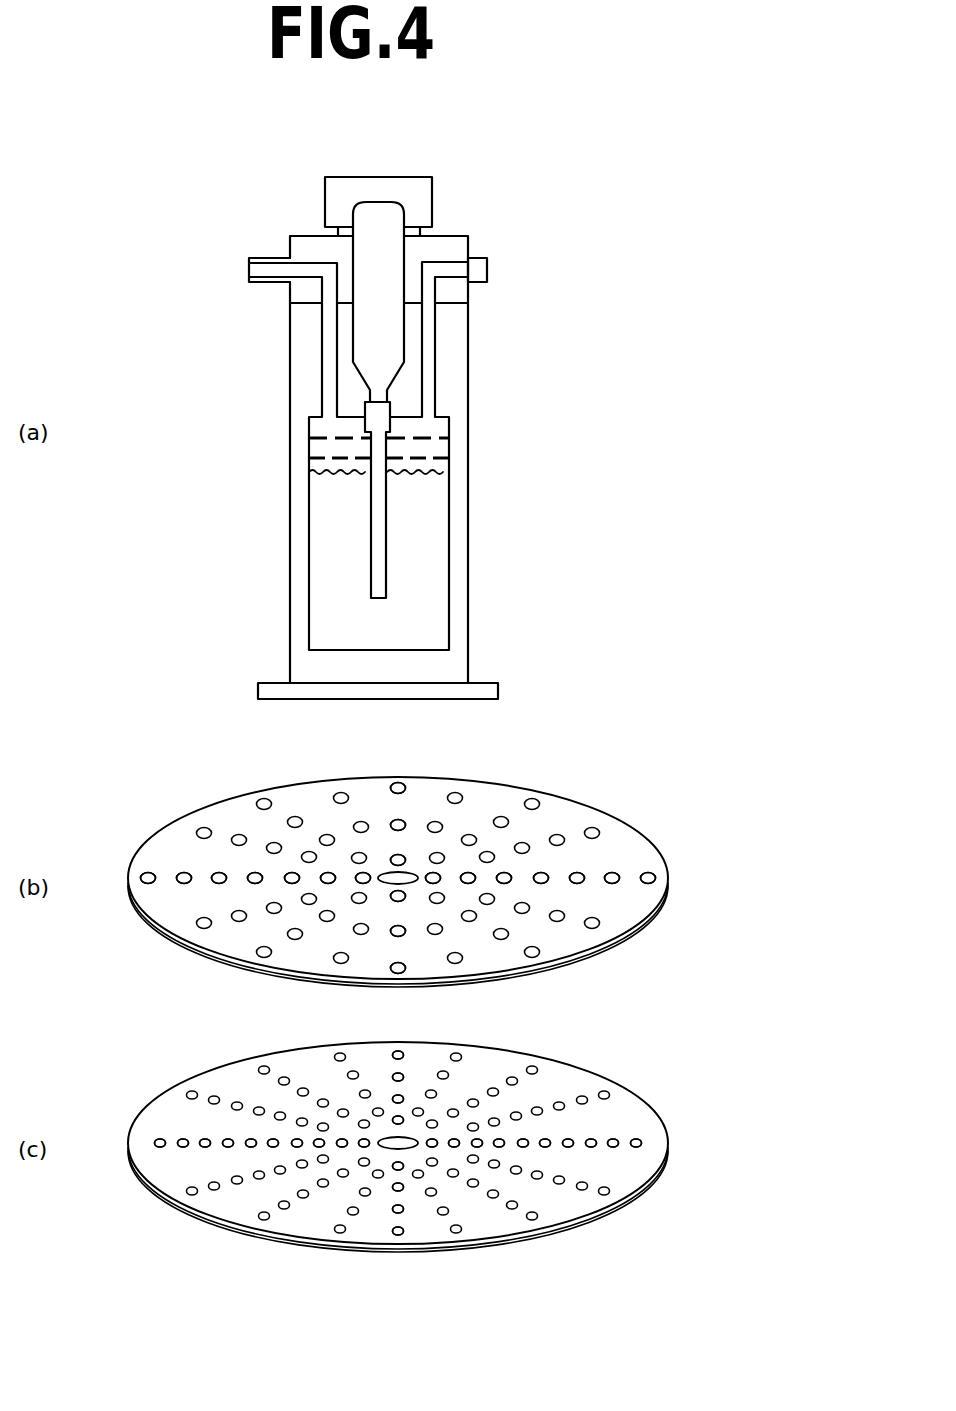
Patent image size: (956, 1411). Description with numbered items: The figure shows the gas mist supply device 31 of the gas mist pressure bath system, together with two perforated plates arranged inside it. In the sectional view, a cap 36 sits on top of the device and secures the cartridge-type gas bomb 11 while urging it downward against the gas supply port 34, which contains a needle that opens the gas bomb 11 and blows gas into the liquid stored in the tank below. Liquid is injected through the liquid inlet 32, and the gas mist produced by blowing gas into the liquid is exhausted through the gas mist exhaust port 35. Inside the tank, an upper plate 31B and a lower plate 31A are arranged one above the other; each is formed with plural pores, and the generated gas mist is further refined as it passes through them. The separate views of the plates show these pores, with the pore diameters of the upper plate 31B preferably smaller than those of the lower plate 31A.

The gas mist supply device 31 is at (484, 199).
The cap 36 is at (403, 177).
The gas bomb 11 is at (393, 360).
The gas supply port 34 is at (377, 417).
The gas mist exhaust port 35 is at (265, 283).
The liquid inlet 32 is at (486, 272).
The lower plate 31A is at (422, 457).
The upper plate 31B is at (423, 437).